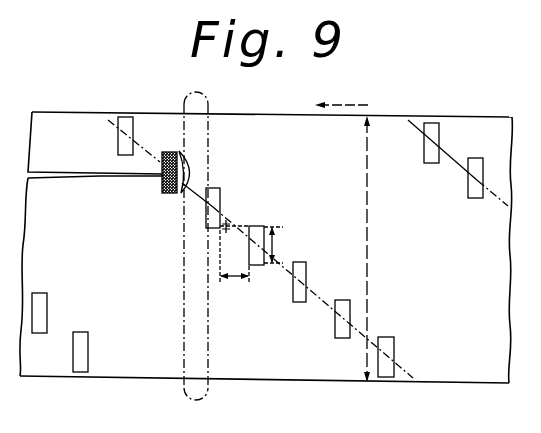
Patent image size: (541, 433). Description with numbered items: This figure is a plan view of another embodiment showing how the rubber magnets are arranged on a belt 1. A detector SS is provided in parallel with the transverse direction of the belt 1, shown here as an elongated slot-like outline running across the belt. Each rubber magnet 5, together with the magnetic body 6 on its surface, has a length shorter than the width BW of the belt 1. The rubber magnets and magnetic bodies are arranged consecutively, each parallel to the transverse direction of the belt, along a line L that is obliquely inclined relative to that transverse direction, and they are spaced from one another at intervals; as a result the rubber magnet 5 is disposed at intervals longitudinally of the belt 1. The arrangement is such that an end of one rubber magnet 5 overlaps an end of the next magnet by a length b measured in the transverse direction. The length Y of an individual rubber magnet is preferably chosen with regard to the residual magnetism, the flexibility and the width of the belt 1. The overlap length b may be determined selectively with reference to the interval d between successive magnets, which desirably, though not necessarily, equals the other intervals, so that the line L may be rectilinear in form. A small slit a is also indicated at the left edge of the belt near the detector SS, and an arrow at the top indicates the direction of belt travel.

The belt 1 is at (398, 126).
The rubber magnet 5 is at (170, 152).
The magnetic body 6 is at (198, 163).
The slit a is at (92, 178).
The overlap length b is at (235, 235).
The interval d is at (234, 256).
The length of the individual rubber magnet Y is at (273, 245).
The line L is at (311, 292).
The detector SS is at (209, 97).
The width of the belt BW is at (360, 249).